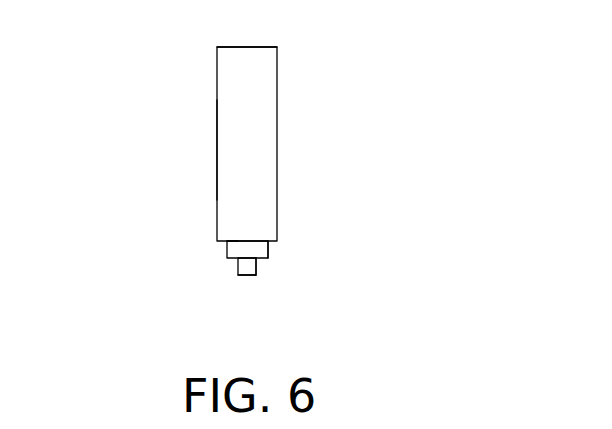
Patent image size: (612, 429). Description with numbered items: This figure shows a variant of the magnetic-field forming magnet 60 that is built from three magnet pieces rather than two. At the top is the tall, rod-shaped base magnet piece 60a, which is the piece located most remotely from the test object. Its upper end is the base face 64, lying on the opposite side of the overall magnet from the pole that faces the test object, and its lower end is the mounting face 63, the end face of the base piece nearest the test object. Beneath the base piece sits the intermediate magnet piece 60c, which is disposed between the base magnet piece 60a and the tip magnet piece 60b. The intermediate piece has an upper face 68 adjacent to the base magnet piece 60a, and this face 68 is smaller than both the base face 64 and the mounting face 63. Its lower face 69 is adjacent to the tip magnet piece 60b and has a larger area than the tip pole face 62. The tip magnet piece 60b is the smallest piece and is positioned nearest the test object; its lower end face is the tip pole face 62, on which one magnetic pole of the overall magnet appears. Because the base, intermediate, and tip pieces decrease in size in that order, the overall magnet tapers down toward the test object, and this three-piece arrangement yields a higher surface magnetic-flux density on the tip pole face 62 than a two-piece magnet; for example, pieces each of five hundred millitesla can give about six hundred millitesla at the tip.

The magnetic-field forming magnet 60 is at (301, 139).
The base magnet piece 60a is at (223, 153).
The tip magnet piece 60b is at (240, 272).
The intermediate magnet piece 60c is at (237, 248).
The tip pole face 62 is at (247, 275).
The mounting face 63 is at (268, 246).
The base face 64 is at (250, 47).
The face adjacent to the base magnet piece 68 is at (250, 241).
The face adjacent to the tip magnet piece 69 is at (256, 262).